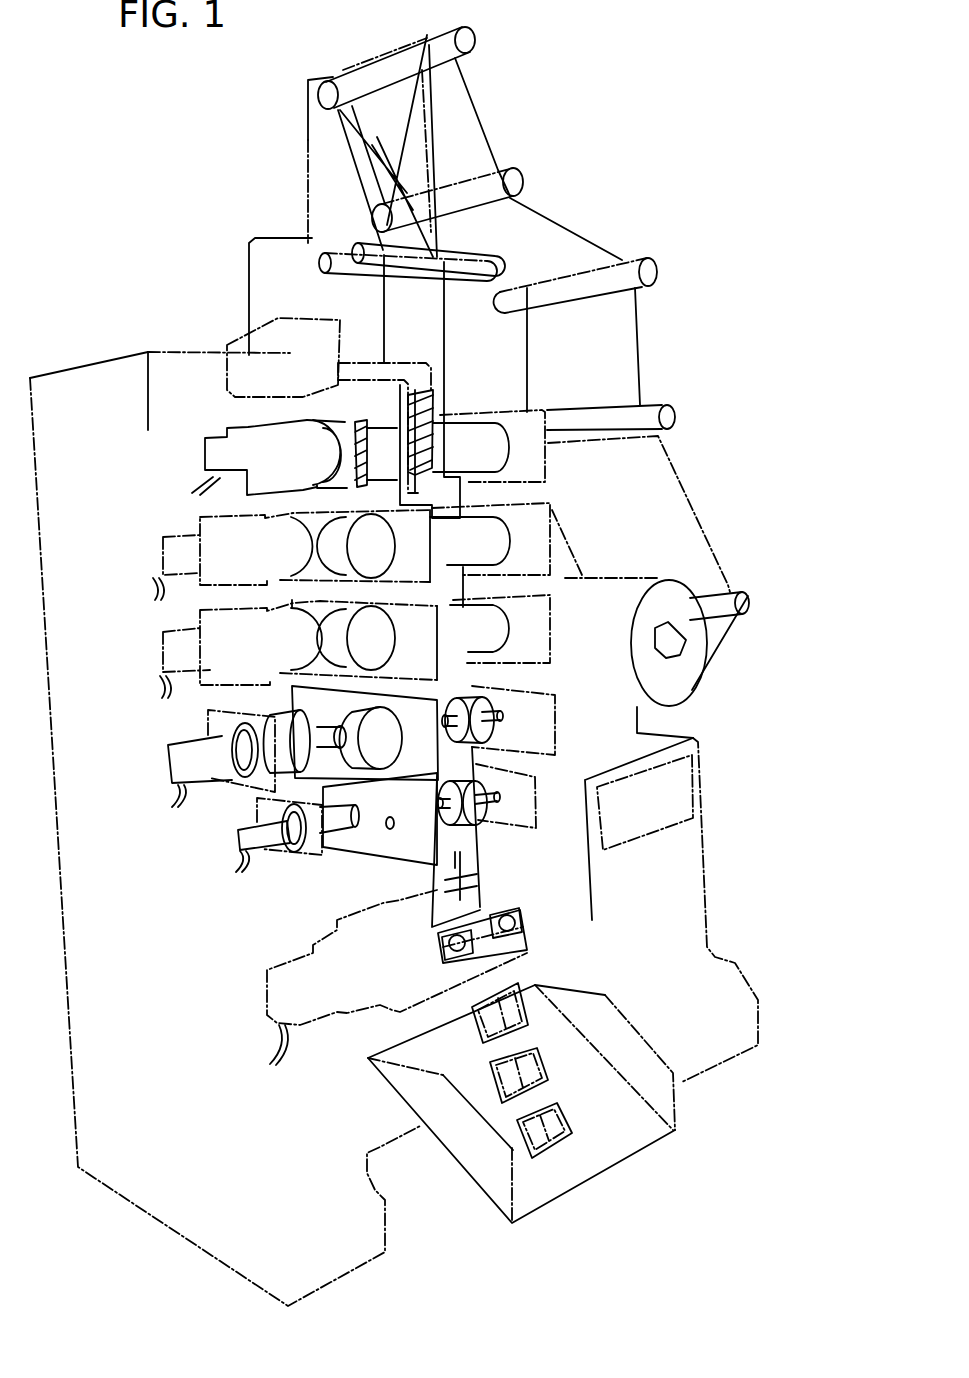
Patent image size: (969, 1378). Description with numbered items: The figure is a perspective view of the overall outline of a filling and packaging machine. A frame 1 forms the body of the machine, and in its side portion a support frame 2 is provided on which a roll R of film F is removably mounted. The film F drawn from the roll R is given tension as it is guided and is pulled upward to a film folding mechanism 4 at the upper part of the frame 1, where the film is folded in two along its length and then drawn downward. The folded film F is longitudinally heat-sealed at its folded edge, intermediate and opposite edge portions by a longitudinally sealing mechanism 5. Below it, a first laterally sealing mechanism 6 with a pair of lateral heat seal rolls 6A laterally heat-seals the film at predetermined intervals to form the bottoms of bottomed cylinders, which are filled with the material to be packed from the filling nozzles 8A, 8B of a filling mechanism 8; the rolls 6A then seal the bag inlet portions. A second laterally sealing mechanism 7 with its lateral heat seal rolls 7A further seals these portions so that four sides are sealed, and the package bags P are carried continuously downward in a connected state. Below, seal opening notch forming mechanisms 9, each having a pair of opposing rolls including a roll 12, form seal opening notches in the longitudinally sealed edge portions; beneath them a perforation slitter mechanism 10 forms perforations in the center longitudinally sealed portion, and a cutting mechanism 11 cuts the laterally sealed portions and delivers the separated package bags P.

The frame 1 is at (115, 378).
The support frame 2 is at (677, 645).
The film folding mechanism 4 is at (347, 215).
The longitudinally sealing mechanism 5 is at (317, 445).
The first laterally sealing mechanism 6 is at (292, 540).
The lateral heat seal rolls 6A is at (493, 538).
The second laterally sealing mechanism 7 is at (290, 650).
The lateral heat seal rolls 7A is at (503, 630).
The filling mechanism 8 is at (297, 310).
The filling nozzle 8A is at (398, 363).
The filling nozzle 8B is at (412, 410).
The seal opening notch forming mechanism 9 is at (533, 733).
The perforation slitter mechanism 10 is at (497, 838).
The cutting mechanism 11 is at (523, 947).
The roll 12 is at (538, 690).
The film F is at (660, 473).
The film roll R is at (672, 690).
The package bags P is at (555, 1075).